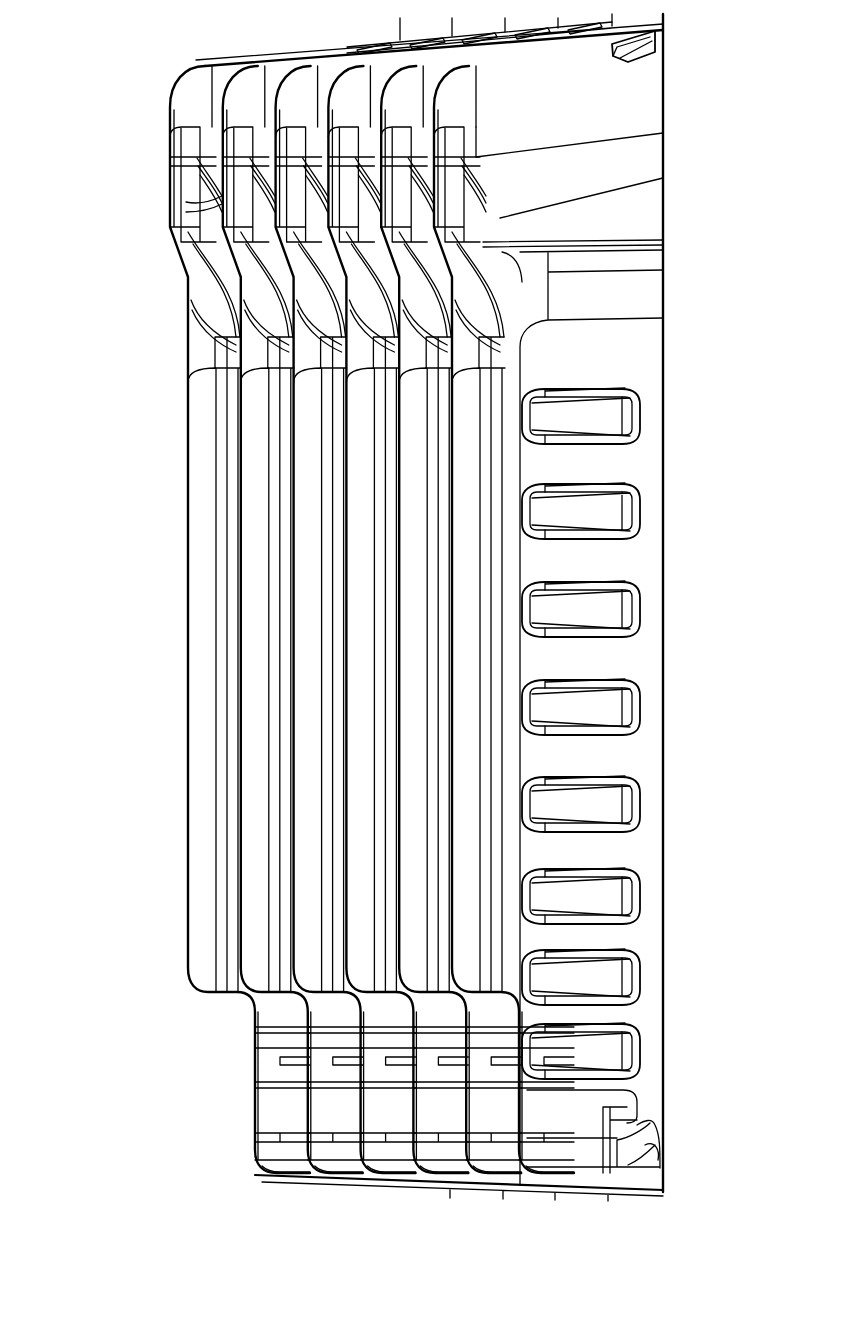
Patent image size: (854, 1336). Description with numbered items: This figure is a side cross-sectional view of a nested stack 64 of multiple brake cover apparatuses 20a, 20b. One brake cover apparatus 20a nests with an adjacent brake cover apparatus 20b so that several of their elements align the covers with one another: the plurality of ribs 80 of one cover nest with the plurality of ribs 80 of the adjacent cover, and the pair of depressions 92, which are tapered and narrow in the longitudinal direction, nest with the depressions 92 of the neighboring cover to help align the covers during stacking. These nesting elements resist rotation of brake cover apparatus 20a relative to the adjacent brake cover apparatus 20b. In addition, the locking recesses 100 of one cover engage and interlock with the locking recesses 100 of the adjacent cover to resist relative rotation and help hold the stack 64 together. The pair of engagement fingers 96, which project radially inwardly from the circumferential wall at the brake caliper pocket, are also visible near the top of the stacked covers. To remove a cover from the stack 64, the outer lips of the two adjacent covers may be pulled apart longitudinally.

The stack 64 is at (132, 94).
The brake cover apparatus 20a is at (186, 80).
The adjacent brake cover apparatus 20b is at (240, 75).
The depressions 92 is at (220, 212).
The engagement fingers 96 is at (643, 53).
The ribs 80 is at (606, 512).
The locking recesses 100 is at (636, 1132).